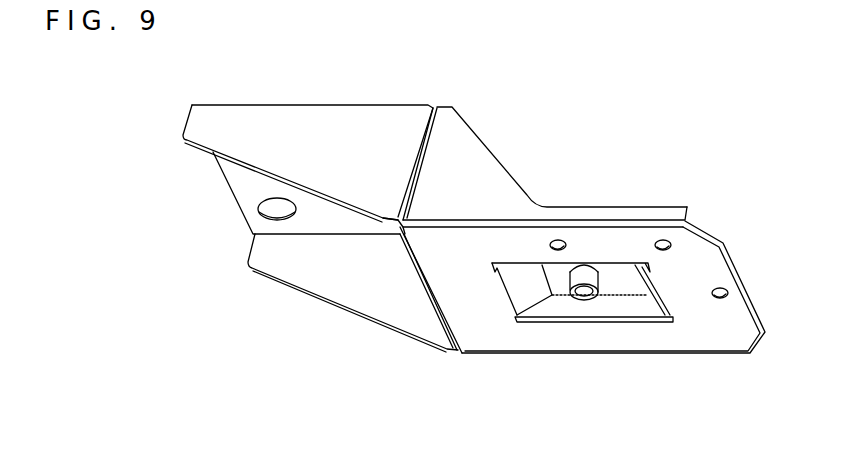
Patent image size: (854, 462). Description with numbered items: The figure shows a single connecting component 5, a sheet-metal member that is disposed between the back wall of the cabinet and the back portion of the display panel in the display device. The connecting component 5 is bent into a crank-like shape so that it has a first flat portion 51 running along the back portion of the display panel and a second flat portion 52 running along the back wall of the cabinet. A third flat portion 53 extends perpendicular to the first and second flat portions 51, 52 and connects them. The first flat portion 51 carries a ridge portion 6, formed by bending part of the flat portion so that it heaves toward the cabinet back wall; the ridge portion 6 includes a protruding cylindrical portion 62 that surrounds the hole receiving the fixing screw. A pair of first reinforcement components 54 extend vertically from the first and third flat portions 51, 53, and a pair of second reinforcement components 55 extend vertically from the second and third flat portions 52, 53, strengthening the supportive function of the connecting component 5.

The connecting component 5 is at (653, 183).
The first flat portion 51 is at (242, 180).
The second flat portion 52 is at (681, 340).
The third flat portion 53 is at (427, 285).
The first reinforcement component 54 is at (340, 117).
The second reinforcement component 55 is at (480, 162).
The ridge portion 6 is at (625, 283).
The cylindrical portion 62 is at (590, 272).